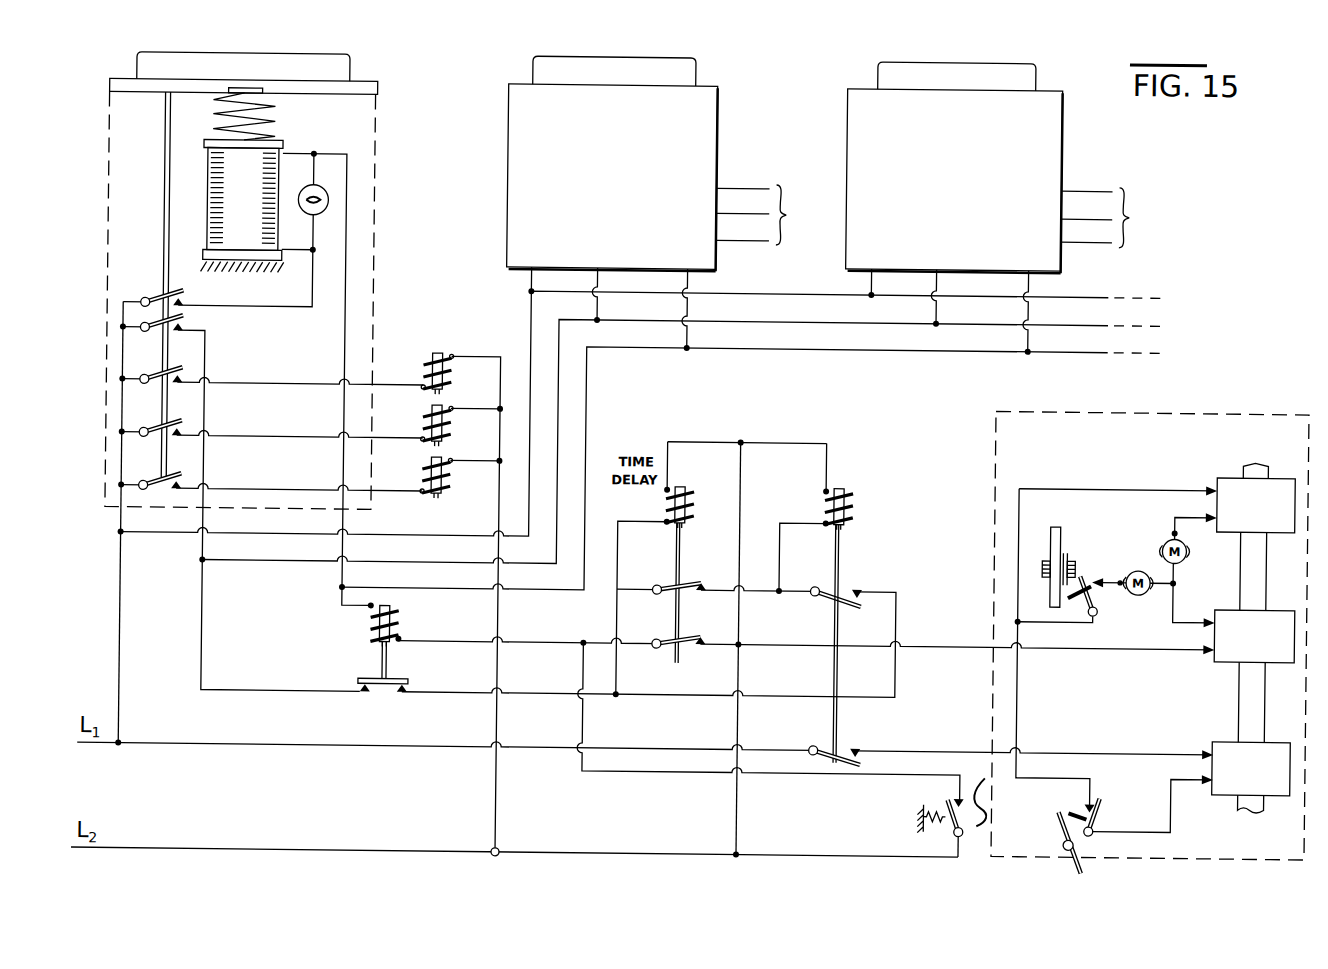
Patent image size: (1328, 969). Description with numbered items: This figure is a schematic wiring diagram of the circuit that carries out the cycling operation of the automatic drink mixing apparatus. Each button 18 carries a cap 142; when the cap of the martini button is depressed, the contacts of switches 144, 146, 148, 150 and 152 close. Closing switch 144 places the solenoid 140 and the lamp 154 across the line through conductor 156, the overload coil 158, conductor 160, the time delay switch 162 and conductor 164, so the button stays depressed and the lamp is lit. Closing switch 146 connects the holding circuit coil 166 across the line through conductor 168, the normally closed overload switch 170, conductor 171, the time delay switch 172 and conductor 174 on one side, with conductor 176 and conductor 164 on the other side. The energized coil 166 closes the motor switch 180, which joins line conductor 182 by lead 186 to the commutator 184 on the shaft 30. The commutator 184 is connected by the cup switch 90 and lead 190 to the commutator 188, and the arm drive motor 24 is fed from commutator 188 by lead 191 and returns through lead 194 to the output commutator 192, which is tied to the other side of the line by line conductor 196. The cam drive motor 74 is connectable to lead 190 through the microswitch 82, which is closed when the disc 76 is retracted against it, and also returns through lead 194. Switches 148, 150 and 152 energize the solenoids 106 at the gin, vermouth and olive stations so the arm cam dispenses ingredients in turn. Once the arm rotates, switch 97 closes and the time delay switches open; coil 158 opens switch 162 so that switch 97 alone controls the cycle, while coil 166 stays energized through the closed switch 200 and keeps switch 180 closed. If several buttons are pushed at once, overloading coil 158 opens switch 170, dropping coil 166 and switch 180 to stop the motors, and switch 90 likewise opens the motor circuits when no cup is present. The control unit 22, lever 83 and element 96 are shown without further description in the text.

The button 18 is at (375, 211).
The cap 142 is at (297, 62).
The solenoid 140 is at (262, 190).
The lamp 154 is at (310, 187).
The conductor 156 is at (288, 309).
The switch 144 is at (182, 294).
The switch 146 is at (182, 324).
The switch 148 is at (182, 367).
The switch 150 is at (182, 420).
The switch 152 is at (182, 473).
The solenoid 106 is at (427, 365).
The overload coil 158 is at (372, 622).
The overload switch 170 is at (376, 698).
The conductor 168 is at (202, 641).
The conductor 160 is at (514, 643).
The conductor 171 is at (519, 694).
The conductor 164 is at (735, 719).
The conductor 176 is at (760, 441).
The time delay switch 172 is at (692, 580).
The time delay switch 162 is at (687, 646).
The conductor 174 is at (750, 591).
The switch 200 is at (843, 588).
The holding circuit coil 166 is at (850, 501).
The line conductor 182 is at (763, 748).
The motor switch 180 is at (845, 746).
The lead 186 is at (1082, 748).
The switch 97 is at (925, 797).
The switch 96 is at (996, 800).
The control unit 22 is at (991, 432).
The lead 190 is at (1019, 690).
The commutator 188 is at (1285, 480).
The output commutator 192 is at (1283, 617).
The commutator 184 is at (1282, 746).
The shaft 30 is at (1241, 686).
The disc 76 is at (1056, 523).
The microswitch 82 is at (1085, 571).
The cam drive motor 74 is at (1136, 590).
The arm drive motor 24 is at (1187, 540).
The lead 191 is at (1190, 509).
The lead 194 is at (1173, 613).
The line conductor 196 is at (1103, 643).
The cup switch 90 is at (1104, 791).
The switch lever 83 is at (1063, 821).